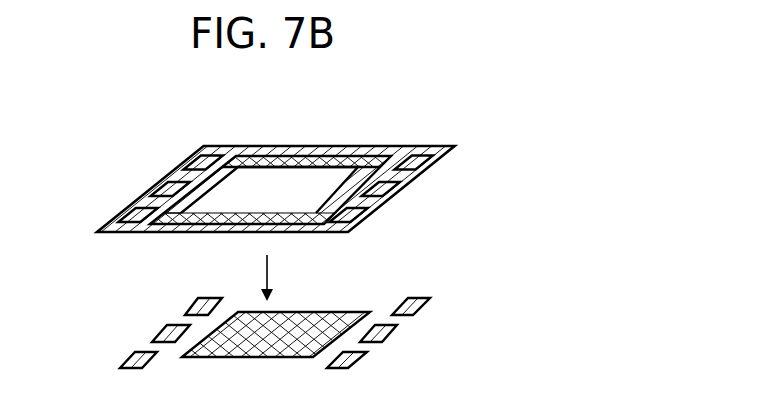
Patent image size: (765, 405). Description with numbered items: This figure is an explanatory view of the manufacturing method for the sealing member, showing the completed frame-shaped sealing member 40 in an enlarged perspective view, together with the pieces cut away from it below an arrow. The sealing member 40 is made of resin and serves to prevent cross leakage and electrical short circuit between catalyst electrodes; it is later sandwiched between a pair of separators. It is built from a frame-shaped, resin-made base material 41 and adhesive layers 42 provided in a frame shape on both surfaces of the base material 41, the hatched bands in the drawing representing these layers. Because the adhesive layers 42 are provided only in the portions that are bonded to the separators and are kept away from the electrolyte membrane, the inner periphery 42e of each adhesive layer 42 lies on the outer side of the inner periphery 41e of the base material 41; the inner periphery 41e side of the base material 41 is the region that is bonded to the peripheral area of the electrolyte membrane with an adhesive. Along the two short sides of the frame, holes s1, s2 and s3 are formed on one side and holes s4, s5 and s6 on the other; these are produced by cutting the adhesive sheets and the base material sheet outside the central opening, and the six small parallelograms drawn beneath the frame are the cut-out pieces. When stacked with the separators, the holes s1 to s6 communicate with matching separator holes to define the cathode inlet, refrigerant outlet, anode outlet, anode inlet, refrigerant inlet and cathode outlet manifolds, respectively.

The sealing member 40 is at (470, 128).
The base material 41 is at (348, 162).
The inner periphery of the base material 41e is at (250, 160).
The adhesive layer 42 is at (345, 224).
The inner periphery of the adhesive layer 42e is at (190, 215).
The hole s1 is at (199, 161).
The hole s2 is at (168, 186).
The hole s3 is at (134, 215).
The hole s4 is at (430, 163).
The hole s5 is at (385, 190).
The hole s6 is at (352, 223).